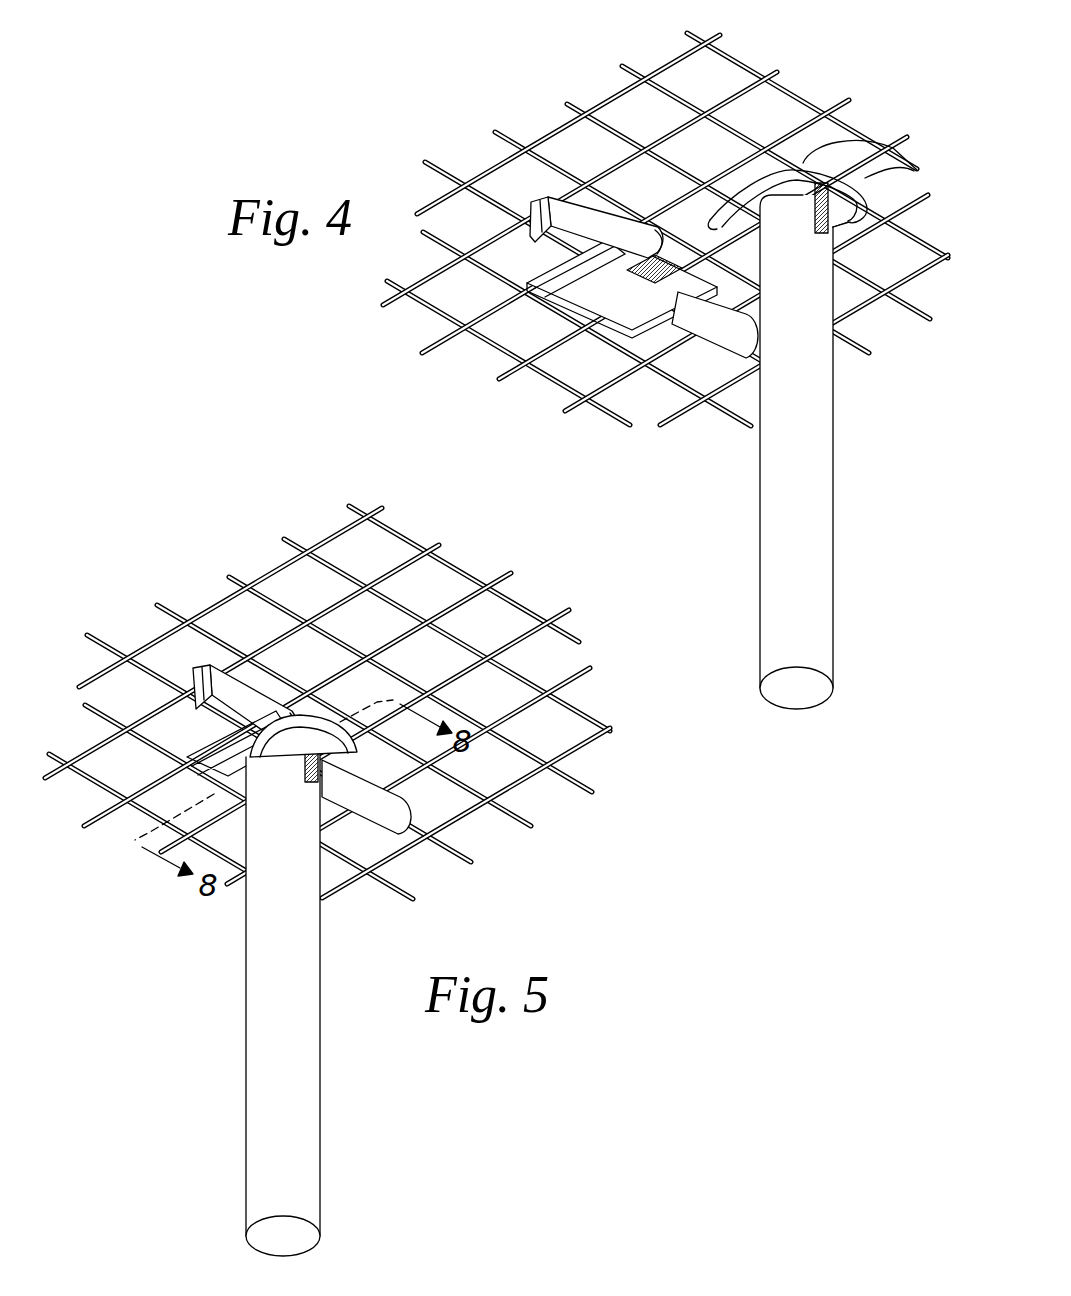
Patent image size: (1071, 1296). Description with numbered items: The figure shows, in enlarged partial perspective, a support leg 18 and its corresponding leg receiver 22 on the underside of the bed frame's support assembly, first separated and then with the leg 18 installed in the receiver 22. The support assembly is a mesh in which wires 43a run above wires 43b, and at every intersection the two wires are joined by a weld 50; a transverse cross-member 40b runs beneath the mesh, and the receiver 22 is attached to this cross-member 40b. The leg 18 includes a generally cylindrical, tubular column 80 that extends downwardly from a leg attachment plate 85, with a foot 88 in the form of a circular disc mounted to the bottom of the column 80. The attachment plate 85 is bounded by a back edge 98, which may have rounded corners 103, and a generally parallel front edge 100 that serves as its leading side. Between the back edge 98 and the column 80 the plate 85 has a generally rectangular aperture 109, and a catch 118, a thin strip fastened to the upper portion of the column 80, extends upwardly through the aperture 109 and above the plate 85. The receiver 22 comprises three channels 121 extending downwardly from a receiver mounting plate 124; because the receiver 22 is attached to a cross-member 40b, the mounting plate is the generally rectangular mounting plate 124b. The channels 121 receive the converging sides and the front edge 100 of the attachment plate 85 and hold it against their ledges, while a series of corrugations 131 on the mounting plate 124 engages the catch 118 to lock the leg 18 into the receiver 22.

In FIG. 4, the leg 18 is at (809, 470).
In FIG. 5, the leg 18 is at (264, 997).
In FIG. 4, the leg receiver 22 is at (669, 260).
In FIG. 5, the leg receiver 22 is at (273, 780).
In FIG. 4, the wires 43a is at (793, 132).
In FIG. 5, the wires 43a is at (452, 604).
In FIG. 4, the wires 43b is at (727, 60).
In FIG. 5, the wires 43b is at (388, 527).
In FIG. 4, the weld 50 is at (665, 225).
In FIG. 5, the weld 50 is at (327, 695).
In FIG. 4, the transverse cross-member 40b is at (573, 195).
In FIG. 5, the transverse cross-member 40b is at (372, 805).
In FIG. 4, the column 80 is at (760, 518).
In FIG. 5, the column 80 is at (320, 1085).
In FIG. 4, the leg attachment plate 85 is at (850, 223).
In FIG. 5, the leg attachment plate 85 is at (420, 770).
In FIG. 4, the foot 88 is at (813, 696).
In FIG. 5, the foot 88 is at (305, 1247).
In FIG. 4, the back edge 98 is at (880, 160).
In FIG. 4, the front edge 100 is at (717, 229).
In FIG. 4, the rounded corners 103 is at (807, 168).
In FIG. 4, the aperture 109 is at (877, 210).
In FIG. 4, the catch 118 is at (812, 208).
In FIG. 5, the catch 118 is at (303, 765).
In FIG. 4, the channels 121 is at (630, 330).
In FIG. 5, the receiver mounting plate 124 is at (283, 702).
In FIG. 4, the rectangular mounting plate 124b is at (660, 235).
In FIG. 4, the corrugations 131 is at (655, 290).